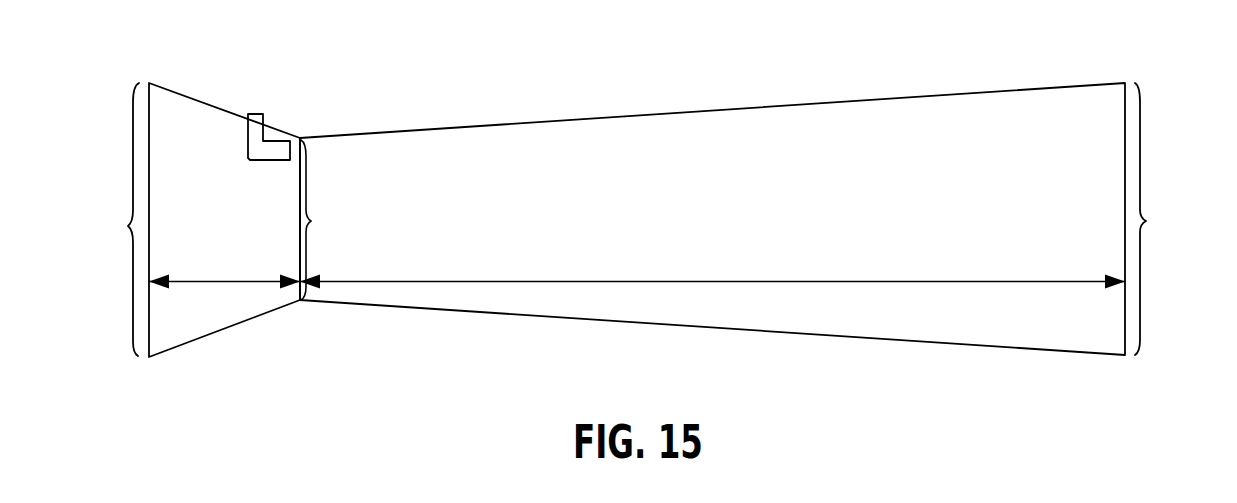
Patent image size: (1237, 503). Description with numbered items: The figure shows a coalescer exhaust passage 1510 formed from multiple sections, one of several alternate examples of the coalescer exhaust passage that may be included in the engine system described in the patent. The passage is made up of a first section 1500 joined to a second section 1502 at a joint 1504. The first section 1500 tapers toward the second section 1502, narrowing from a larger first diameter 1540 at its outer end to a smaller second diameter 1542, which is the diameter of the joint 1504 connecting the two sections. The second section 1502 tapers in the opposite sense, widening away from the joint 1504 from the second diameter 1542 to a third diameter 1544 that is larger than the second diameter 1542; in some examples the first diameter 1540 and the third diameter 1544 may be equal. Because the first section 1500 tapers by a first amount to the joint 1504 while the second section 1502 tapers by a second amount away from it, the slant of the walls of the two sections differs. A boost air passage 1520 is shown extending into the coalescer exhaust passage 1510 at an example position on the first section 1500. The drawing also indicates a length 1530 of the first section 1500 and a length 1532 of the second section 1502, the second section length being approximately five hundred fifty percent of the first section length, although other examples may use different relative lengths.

The first section 1500 is at (245, 233).
The second section 1502 is at (735, 232).
The joint 1504 is at (298, 216).
The coalescer exhaust passage 1510 is at (567, 64).
The boost air passage 1520 is at (248, 136).
The length of the first section 1530 is at (230, 282).
The length of the second section 1532 is at (945, 282).
The first diameter 1540 is at (128, 225).
The second diameter 1542 is at (312, 220).
The third diameter 1544 is at (1146, 220).